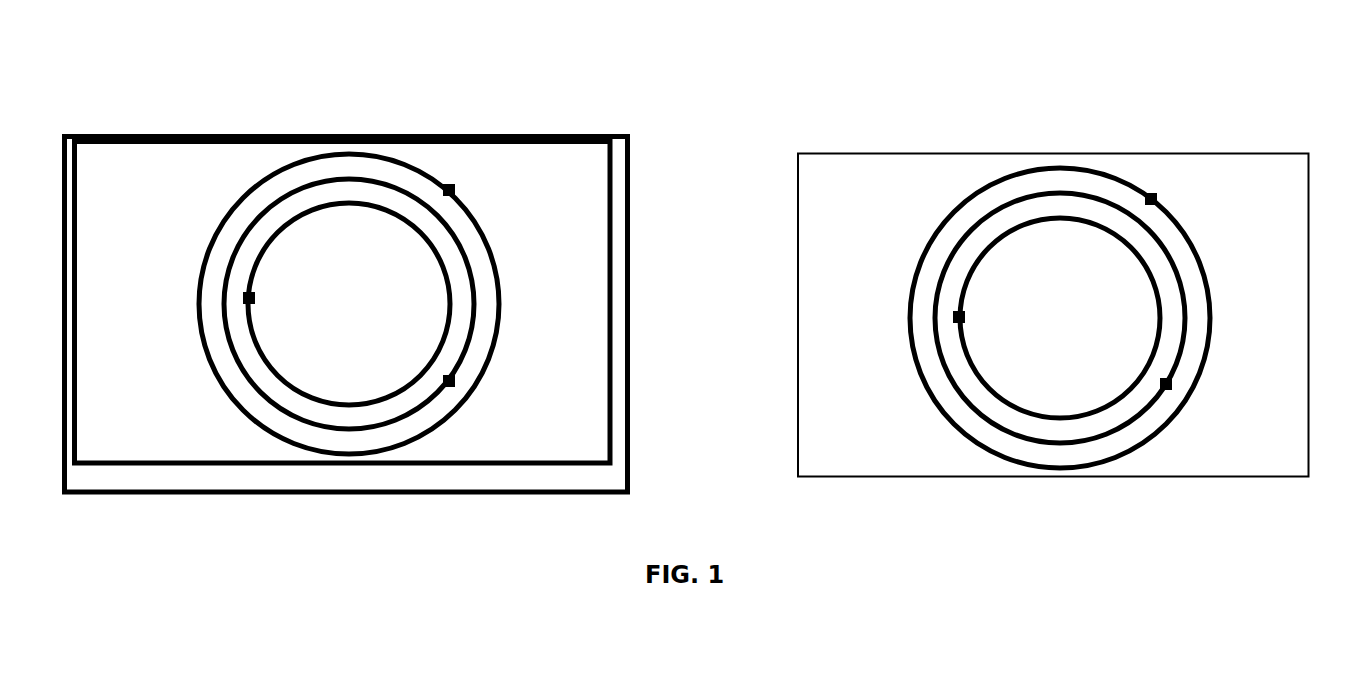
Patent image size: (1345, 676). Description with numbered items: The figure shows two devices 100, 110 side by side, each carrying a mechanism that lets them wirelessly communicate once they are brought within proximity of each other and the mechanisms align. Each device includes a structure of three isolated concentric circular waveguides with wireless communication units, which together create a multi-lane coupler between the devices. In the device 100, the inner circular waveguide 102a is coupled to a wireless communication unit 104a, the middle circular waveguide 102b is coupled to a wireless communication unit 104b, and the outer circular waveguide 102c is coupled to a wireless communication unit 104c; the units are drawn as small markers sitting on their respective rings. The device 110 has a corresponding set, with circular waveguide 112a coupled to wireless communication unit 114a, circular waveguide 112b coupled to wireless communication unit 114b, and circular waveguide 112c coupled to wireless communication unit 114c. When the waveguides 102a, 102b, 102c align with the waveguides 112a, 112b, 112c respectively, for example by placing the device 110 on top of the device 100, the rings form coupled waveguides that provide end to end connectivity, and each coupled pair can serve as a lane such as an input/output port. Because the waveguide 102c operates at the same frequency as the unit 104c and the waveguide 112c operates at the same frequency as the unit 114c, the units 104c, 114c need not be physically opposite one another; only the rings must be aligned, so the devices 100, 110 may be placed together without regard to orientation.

The device 100 is at (503, 65).
The circular waveguide 102a is at (448, 286).
The circular waveguide 102b is at (475, 303).
The circular waveguide 102c is at (487, 233).
The wireless communication unit 104a is at (255, 297).
The wireless communication unit 104b is at (446, 380).
The wireless communication unit 104c is at (455, 189).
The device 110 is at (1186, 94).
The circular waveguide 112a is at (968, 278).
The circular waveguide 112b is at (1183, 302).
The circular waveguide 112c is at (1195, 248).
The wireless communication unit 114a is at (965, 316).
The wireless communication unit 114b is at (1172, 383).
The wireless communication unit 114c is at (1157, 198).